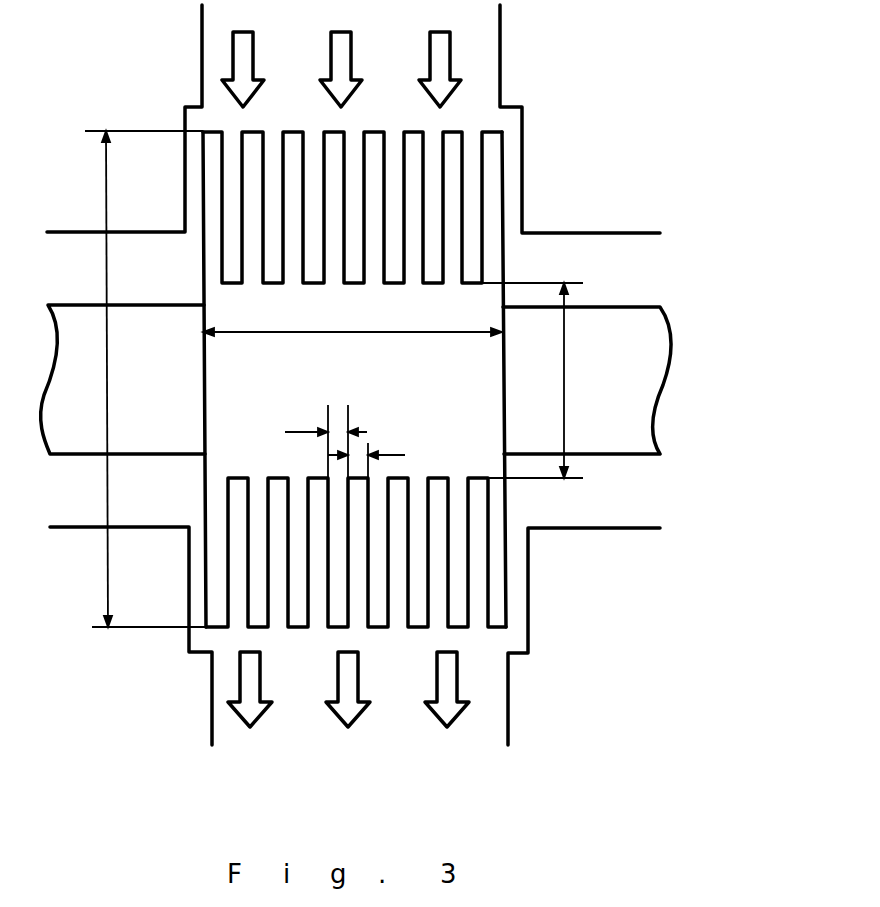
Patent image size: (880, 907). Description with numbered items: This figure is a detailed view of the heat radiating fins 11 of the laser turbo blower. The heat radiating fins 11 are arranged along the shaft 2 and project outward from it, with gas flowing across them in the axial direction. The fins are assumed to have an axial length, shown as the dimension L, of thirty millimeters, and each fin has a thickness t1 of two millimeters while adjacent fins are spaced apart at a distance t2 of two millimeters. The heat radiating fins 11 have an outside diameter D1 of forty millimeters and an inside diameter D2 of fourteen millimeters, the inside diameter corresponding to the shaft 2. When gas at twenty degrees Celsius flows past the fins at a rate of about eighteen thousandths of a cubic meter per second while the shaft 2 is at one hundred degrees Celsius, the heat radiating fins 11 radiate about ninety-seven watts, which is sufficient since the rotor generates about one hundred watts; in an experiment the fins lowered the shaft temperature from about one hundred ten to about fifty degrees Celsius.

The shaft 2 is at (665, 385).
The heat radiating fins 11 is at (503, 178).
The outside diameter D1 is at (134, 379).
The inside diameter D2 is at (522, 380).
The fin core length dimension L is at (352, 315).
The thickness t1 is at (325, 438).
The distance t2 is at (366, 451).